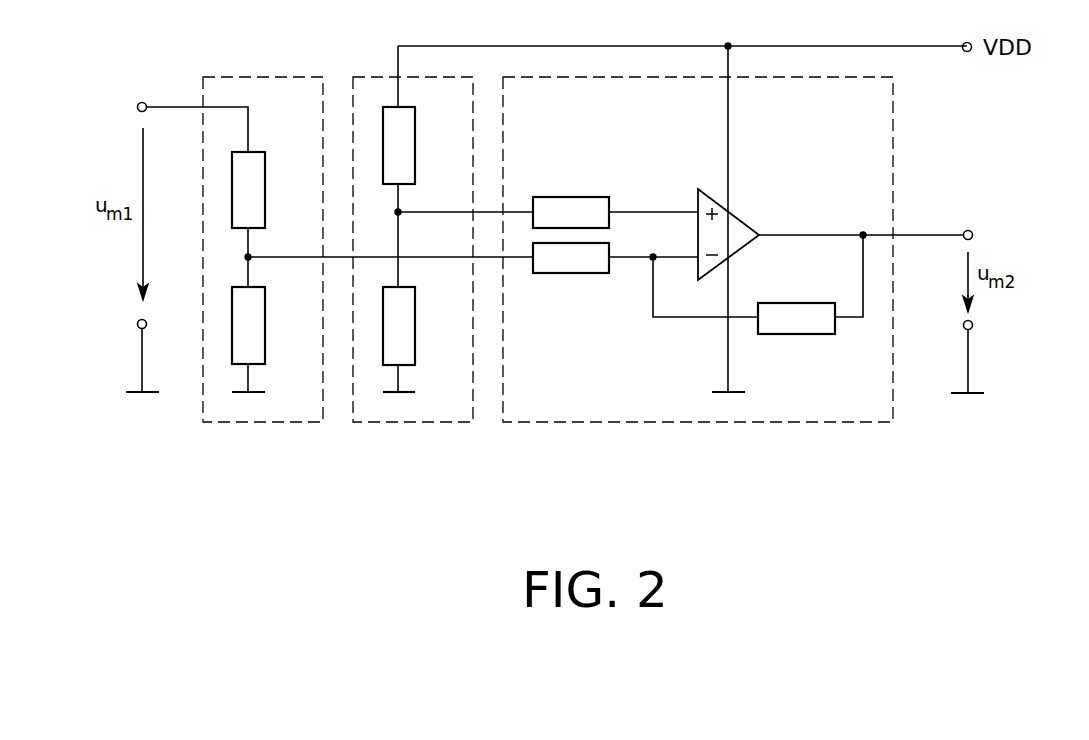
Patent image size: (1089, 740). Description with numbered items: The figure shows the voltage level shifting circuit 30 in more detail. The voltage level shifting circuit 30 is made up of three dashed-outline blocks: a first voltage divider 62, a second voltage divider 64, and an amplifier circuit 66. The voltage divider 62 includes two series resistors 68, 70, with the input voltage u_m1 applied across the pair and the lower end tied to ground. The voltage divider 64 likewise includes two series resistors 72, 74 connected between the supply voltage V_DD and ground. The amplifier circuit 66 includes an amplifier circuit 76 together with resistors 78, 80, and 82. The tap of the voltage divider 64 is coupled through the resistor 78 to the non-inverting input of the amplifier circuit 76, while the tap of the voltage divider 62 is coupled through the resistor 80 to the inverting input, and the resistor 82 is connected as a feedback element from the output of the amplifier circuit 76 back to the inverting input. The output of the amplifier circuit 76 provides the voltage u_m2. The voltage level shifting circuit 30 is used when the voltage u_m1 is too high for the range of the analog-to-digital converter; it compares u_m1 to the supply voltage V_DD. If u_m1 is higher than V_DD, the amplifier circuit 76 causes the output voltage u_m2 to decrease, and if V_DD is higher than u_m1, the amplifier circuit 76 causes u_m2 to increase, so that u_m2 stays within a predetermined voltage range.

The voltage level shifting circuit 30 is at (816, 486).
The voltage divider 62 is at (252, 422).
The voltage divider 64 is at (402, 422).
The amplifier circuit 66 is at (660, 422).
The resistor 68 is at (266, 184).
The resistor 70 is at (266, 320).
The resistor 72 is at (416, 134).
The resistor 74 is at (416, 320).
The amplifier circuit 76 is at (744, 223).
The resistor 78 is at (570, 197).
The resistor 80 is at (570, 273).
The resistor 82 is at (800, 334).